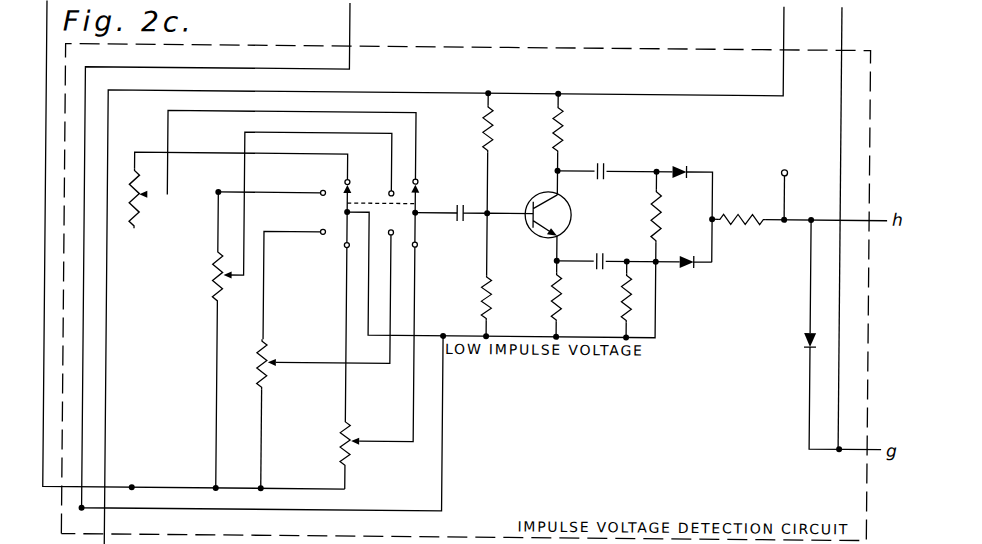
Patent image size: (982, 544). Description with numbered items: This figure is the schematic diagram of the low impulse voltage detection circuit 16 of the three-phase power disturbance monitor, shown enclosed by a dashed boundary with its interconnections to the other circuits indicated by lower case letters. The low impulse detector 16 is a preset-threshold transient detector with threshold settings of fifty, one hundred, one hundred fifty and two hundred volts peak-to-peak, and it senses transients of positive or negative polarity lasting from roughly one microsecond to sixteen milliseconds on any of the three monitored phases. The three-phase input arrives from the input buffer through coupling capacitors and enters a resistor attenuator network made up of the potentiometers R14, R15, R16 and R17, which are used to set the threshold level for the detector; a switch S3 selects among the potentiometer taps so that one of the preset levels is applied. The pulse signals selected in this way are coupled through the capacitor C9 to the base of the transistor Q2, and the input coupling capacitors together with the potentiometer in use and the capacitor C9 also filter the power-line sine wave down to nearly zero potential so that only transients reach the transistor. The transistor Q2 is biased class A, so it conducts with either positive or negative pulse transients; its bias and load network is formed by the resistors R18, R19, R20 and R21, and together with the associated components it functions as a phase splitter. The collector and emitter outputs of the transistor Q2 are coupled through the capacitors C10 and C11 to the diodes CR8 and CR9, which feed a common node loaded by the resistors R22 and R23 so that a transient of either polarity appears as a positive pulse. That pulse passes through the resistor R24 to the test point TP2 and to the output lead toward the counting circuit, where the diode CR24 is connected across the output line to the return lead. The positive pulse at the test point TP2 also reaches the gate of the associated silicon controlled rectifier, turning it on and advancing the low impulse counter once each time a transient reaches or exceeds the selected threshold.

The low impulse voltage detection circuit 16 is at (578, 42).
The potentiometer R14 is at (149, 201).
The potentiometer R15 is at (205, 340).
The potentiometer R16 is at (277, 413).
The potentiometer R17 is at (332, 443).
The switch S3 is at (376, 206).
The capacitor C9 is at (458, 194).
The resistor R18 is at (470, 297).
The resistor R19 is at (471, 128).
The resistor R20 is at (538, 128).
The resistor R21 is at (538, 297).
The resistor R22 is at (607, 297).
The resistor R23 is at (637, 215).
The resistor R24 is at (741, 203).
The transistor Q2 is at (542, 218).
The capacitor C10 is at (597, 155).
The capacitor C11 is at (598, 246).
The diode CR8 is at (684, 163).
The diode CR9 is at (697, 270).
The diode CR24 is at (786, 343).
The test point TP2 is at (782, 166).